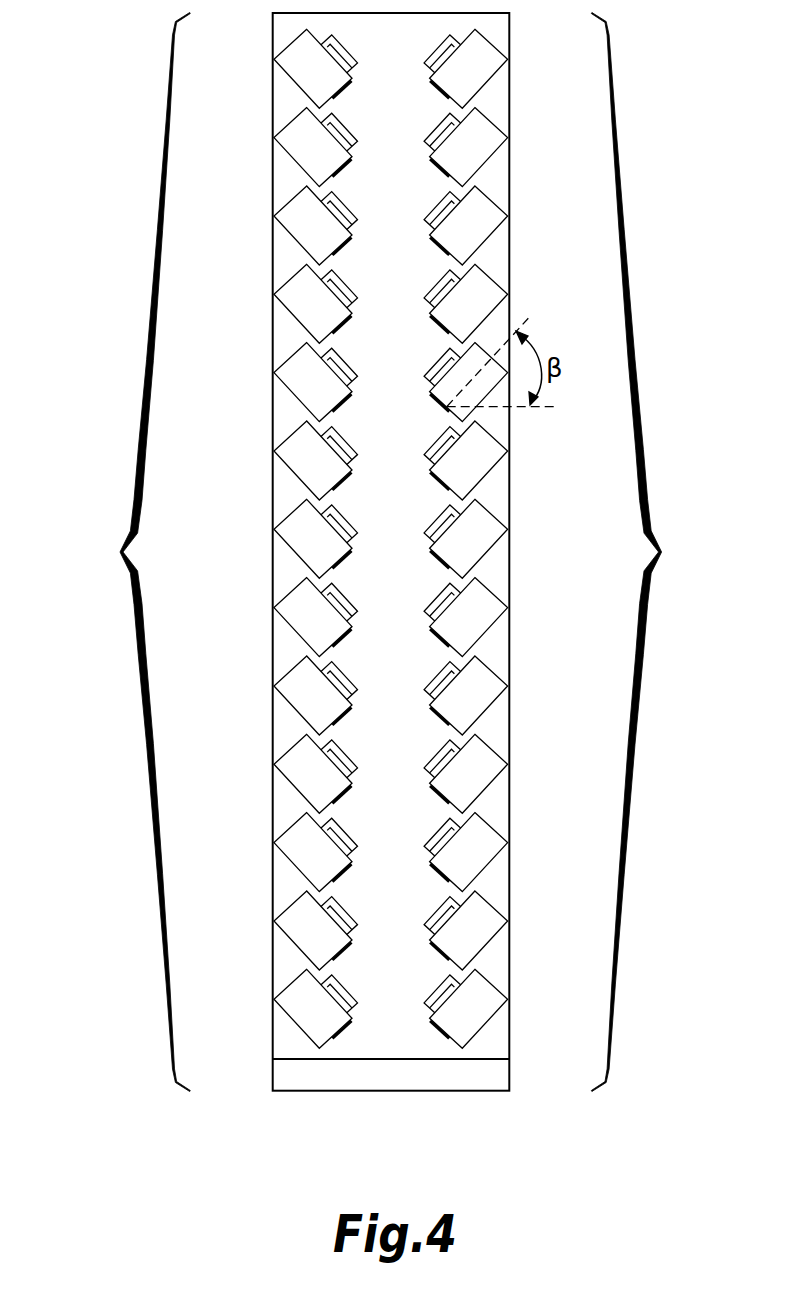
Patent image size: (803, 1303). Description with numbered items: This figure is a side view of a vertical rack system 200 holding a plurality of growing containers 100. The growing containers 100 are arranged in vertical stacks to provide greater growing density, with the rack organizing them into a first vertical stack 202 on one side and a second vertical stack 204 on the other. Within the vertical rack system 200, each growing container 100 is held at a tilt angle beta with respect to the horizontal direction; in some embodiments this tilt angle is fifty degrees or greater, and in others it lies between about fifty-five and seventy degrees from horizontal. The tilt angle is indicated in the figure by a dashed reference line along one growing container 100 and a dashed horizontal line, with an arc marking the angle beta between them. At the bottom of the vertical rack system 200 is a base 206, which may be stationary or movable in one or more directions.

The growing container 100 is at (296, 85).
The vertical rack system 200 is at (100, 77).
The first vertical stack 202 is at (137, 552).
The second vertical stack 204 is at (644, 552).
The base 206 is at (469, 1083).